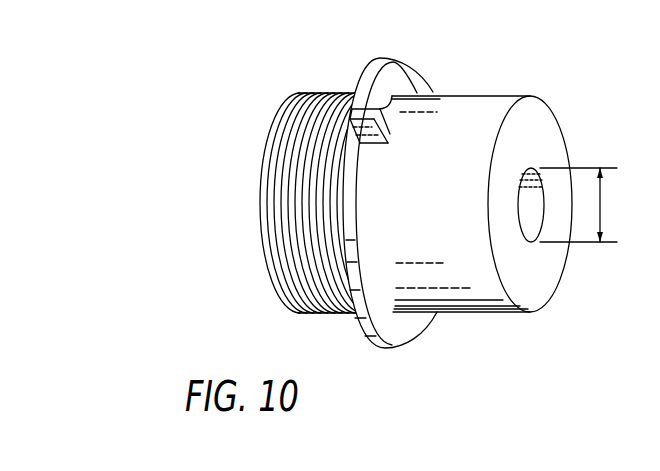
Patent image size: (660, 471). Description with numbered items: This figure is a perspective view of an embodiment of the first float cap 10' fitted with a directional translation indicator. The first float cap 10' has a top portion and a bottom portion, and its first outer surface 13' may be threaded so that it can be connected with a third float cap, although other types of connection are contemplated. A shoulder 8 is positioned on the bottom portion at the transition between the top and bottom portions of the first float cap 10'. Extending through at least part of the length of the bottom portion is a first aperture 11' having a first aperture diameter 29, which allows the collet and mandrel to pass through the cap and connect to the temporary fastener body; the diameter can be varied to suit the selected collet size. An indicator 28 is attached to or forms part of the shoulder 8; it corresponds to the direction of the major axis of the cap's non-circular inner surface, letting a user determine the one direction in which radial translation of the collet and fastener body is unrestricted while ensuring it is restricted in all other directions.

The first float cap 10' is at (434, 189).
The first outer surface 13' is at (296, 203).
The shoulder 8 is at (393, 337).
The directional indicator 28 is at (400, 66).
The first aperture 11' is at (577, 183).
The first aperture diameter 29 is at (600, 203).